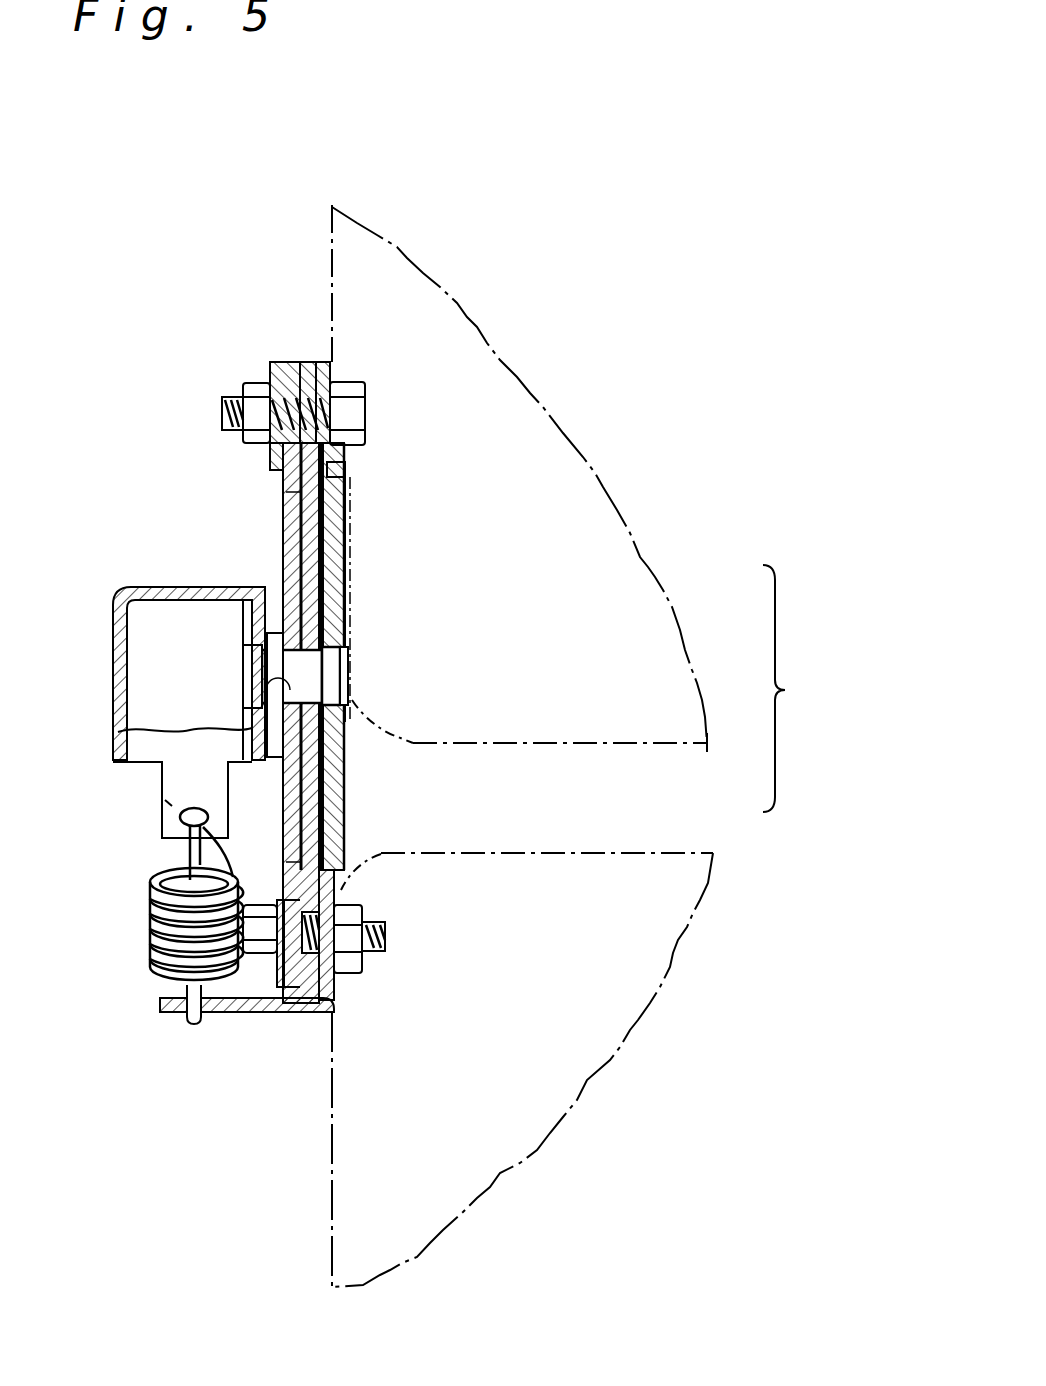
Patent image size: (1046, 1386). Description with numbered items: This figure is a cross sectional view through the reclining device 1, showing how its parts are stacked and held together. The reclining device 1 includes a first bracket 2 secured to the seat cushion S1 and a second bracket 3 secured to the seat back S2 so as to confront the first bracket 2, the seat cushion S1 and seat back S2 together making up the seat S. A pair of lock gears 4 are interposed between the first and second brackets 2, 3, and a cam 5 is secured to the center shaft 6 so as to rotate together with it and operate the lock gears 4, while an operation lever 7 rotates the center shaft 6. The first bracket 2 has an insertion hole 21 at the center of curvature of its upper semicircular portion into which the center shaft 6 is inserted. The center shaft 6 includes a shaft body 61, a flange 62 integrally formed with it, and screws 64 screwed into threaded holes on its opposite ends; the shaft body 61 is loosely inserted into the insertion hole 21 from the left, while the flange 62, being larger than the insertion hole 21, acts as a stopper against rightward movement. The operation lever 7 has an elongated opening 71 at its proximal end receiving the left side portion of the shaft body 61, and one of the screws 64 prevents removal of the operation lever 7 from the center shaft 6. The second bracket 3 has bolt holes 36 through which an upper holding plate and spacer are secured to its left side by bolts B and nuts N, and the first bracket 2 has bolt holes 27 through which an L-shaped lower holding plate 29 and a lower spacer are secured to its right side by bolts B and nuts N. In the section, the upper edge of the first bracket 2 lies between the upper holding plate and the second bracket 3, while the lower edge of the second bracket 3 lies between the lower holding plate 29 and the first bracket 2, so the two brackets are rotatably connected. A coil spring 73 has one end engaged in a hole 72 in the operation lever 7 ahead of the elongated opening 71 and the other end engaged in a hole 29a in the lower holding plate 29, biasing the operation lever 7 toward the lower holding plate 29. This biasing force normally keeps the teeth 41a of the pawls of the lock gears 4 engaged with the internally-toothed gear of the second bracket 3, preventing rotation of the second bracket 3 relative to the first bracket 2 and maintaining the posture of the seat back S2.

The reclining device 1 is at (368, 535).
The first bracket 2 is at (283, 520).
The second bracket 3 is at (340, 455).
The lock gears 4 is at (347, 512).
The cam 5 is at (347, 620).
The center shaft 6 is at (348, 660).
The operation lever 7 is at (113, 650).
The insertion hole 21 is at (243, 690).
The bolt holes 27 is at (300, 1012).
The lower holding plate 29 is at (258, 1012).
The hole 29a is at (165, 1012).
The bolt holes 36 is at (298, 362).
The teeth 41a is at (283, 495).
The shaft body 61 is at (348, 690).
The flange 62 is at (268, 633).
The screws 64 is at (243, 683).
The elongated opening 71 is at (243, 650).
The hole 72 is at (170, 798).
The coil spring 73 is at (150, 925).
The bolts B is at (362, 385).
The nuts N is at (262, 395).
The space S is at (789, 688).
The seat cushion S1 is at (628, 892).
The seat back S2 is at (607, 640).